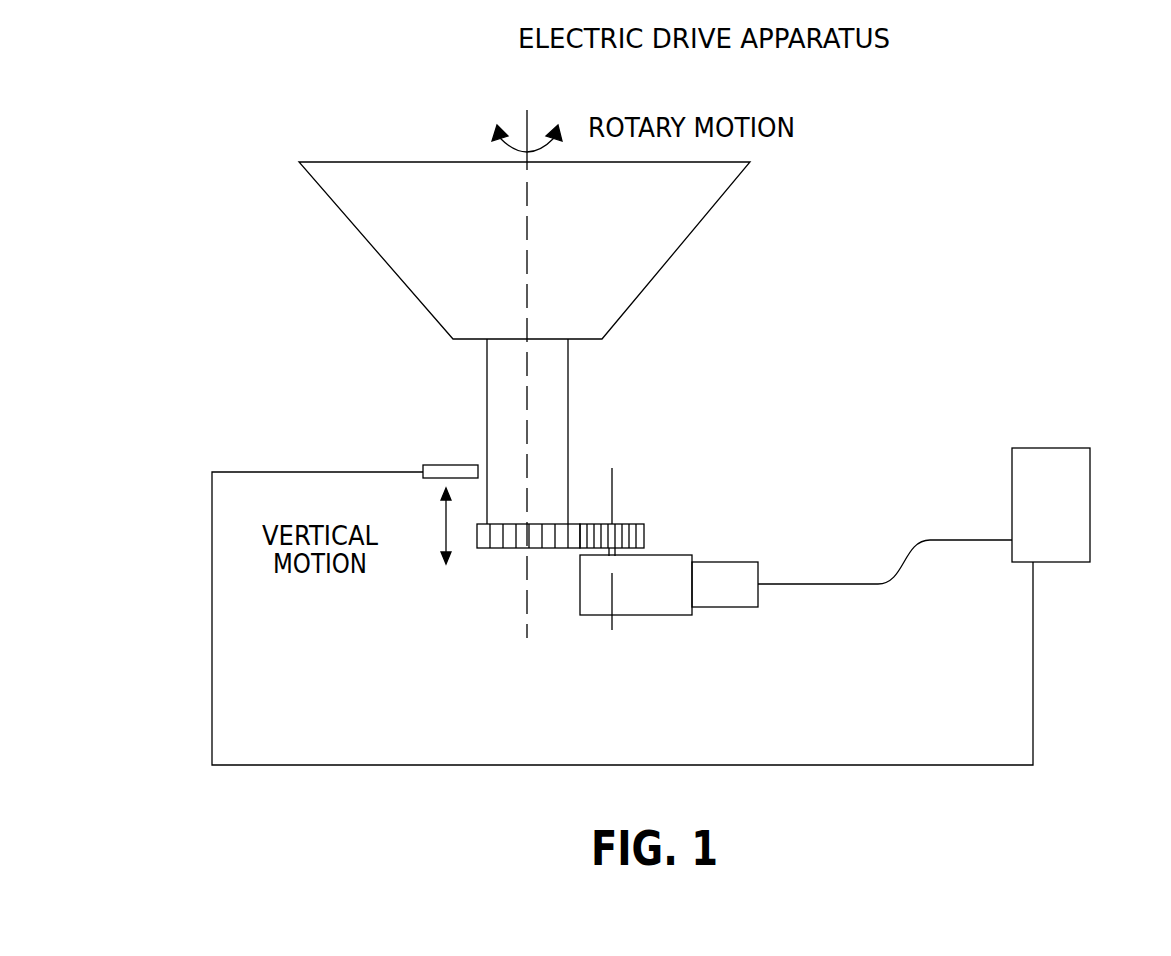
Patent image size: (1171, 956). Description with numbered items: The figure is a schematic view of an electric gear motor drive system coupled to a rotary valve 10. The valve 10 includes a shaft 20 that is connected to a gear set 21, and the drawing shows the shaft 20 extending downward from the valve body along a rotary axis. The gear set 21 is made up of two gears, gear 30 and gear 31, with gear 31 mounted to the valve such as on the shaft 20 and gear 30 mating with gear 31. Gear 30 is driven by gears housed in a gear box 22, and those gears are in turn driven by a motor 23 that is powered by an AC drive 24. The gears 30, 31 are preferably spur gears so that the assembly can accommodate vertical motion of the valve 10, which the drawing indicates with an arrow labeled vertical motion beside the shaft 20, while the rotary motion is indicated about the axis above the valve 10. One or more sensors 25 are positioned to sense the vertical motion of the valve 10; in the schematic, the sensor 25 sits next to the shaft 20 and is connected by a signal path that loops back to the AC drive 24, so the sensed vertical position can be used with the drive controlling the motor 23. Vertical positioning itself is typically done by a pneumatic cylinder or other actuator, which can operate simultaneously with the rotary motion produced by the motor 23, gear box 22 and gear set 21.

The rotary valve 10 is at (418, 251).
The shaft 20 is at (550, 403).
The gear set 21 is at (647, 518).
The gear box 22 is at (665, 592).
The motor 23 is at (723, 562).
The AC drive 24 is at (1090, 487).
The sensor 25 is at (450, 463).
The gear 30 is at (644, 528).
The gear 31 is at (523, 537).